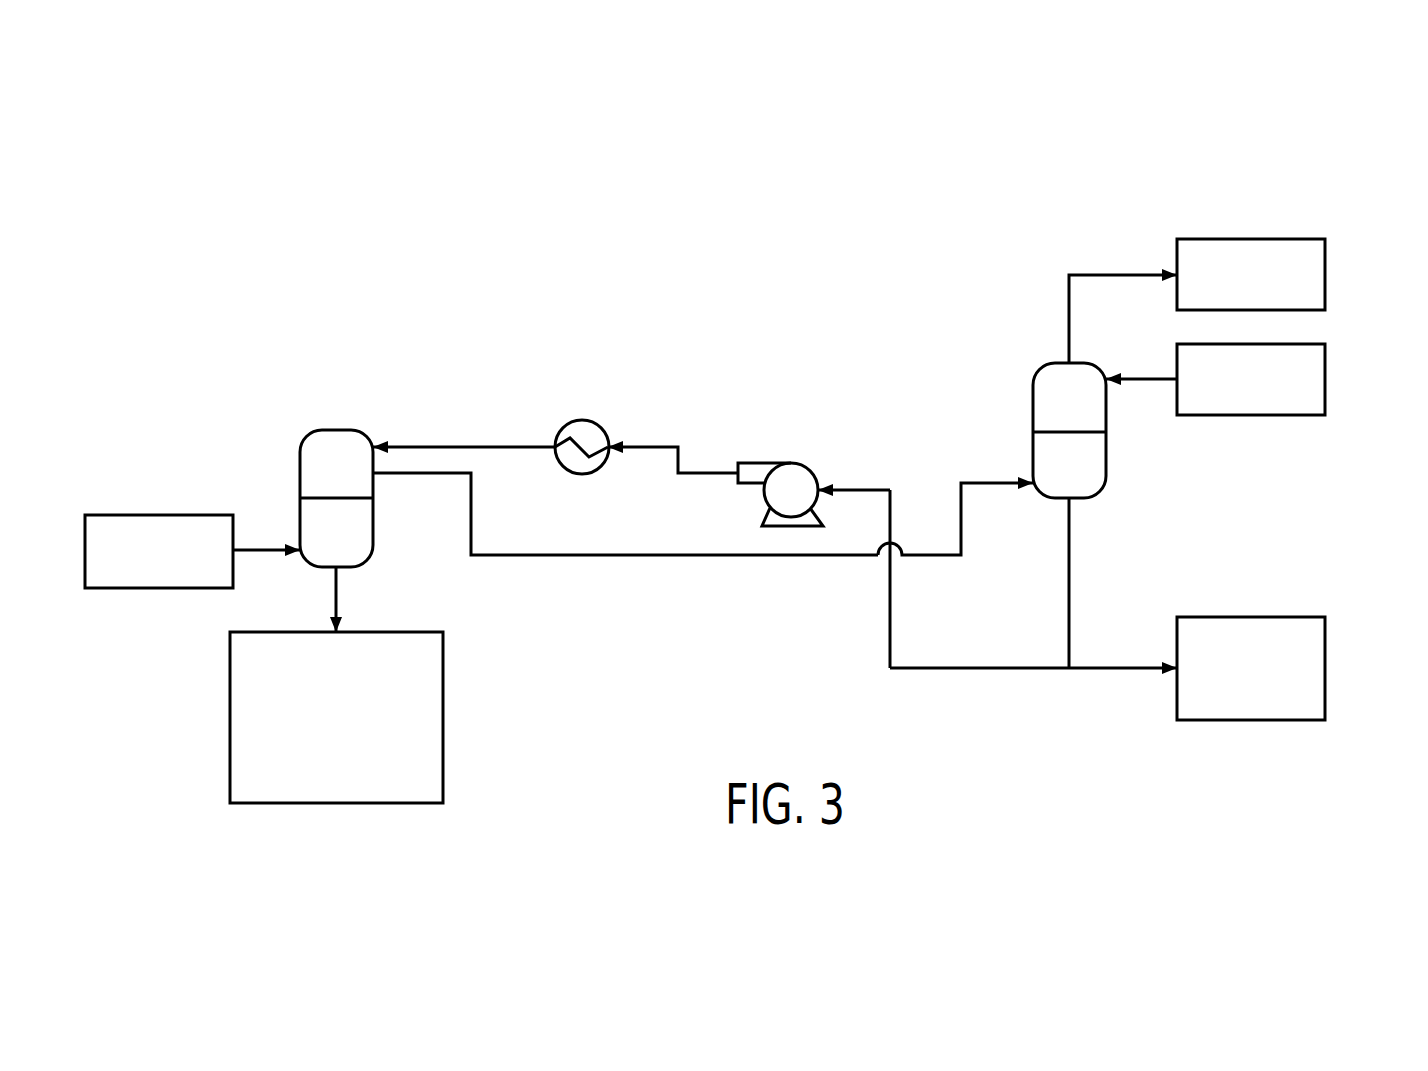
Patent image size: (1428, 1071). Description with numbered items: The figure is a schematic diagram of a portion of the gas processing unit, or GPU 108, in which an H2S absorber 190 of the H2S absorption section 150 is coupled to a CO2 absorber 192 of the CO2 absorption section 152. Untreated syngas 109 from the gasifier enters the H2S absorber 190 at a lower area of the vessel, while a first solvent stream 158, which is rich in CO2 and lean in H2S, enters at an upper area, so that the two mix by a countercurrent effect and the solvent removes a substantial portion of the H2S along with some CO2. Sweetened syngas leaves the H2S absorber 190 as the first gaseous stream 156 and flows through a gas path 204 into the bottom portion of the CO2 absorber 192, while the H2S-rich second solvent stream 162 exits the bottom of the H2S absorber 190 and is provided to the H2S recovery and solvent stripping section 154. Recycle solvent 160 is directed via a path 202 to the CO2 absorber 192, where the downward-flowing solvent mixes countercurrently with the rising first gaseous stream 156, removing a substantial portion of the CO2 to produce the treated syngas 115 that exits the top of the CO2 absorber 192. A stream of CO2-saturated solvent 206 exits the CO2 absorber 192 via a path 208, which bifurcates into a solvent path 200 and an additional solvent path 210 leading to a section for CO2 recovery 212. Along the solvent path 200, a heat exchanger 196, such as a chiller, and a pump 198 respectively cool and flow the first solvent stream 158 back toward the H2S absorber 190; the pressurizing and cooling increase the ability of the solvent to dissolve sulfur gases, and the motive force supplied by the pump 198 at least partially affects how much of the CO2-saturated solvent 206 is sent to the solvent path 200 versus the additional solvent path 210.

The gas processing unit 108 is at (903, 155).
The untreated syngas 109 is at (158, 514).
The treated syngas 115 is at (1325, 275).
The H2S absorption section 150 is at (490, 355).
The CO2 absorption section 152 is at (1123, 208).
The H2S recovery and solvent stripping section 154 is at (443, 718).
The first gaseous stream 156 is at (420, 473).
The first solvent stream 158 is at (472, 447).
The solvent 160 is at (1325, 380).
The second solvent stream 162 is at (338, 592).
The H2S absorber 190 is at (337, 430).
The CO2 absorber 192 is at (1040, 365).
The heat exchanger 196 is at (602, 425).
The pump 198 is at (793, 463).
The solvent path 200 is at (693, 433).
The path 202 is at (1147, 378).
The gas path 204 is at (692, 567).
The CO2-saturated solvent 206 is at (1069, 585).
The path 208 is at (1192, 532).
The additional solvent path 210 is at (1105, 680).
The section for CO2 recovery 212 is at (1325, 668).